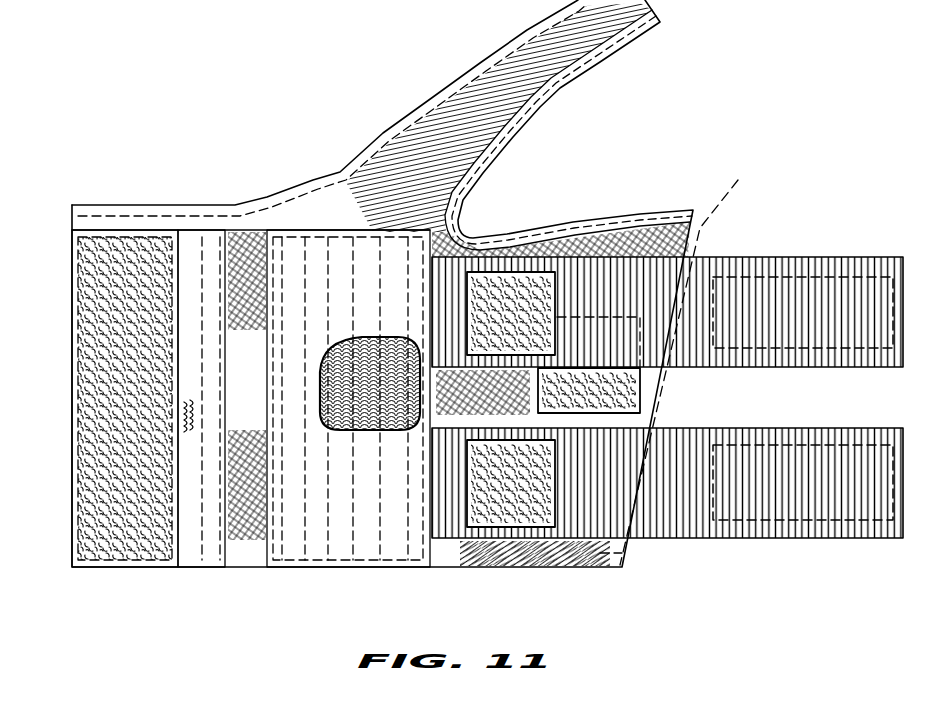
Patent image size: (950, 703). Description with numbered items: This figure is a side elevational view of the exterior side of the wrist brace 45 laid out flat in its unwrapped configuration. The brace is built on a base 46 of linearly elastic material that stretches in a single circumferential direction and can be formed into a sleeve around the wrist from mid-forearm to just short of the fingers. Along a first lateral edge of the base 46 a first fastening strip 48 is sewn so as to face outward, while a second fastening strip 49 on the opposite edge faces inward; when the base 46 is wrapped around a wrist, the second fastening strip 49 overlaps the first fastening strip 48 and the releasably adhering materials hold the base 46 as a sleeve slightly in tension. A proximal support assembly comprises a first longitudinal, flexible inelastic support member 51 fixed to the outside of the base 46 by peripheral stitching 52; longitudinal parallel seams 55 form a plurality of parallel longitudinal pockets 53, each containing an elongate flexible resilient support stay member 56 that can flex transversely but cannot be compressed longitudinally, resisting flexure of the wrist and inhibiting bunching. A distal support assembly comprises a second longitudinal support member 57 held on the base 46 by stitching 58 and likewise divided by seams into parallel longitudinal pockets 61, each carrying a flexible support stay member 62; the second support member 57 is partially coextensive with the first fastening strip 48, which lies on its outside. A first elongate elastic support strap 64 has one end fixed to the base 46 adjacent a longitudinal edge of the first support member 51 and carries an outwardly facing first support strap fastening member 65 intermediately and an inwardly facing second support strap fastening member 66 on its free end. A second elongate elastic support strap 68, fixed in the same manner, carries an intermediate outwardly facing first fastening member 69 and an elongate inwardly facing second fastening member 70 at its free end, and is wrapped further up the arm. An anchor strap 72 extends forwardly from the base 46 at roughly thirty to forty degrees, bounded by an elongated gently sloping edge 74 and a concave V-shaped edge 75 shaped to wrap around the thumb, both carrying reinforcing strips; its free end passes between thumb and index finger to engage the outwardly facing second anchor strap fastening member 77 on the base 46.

The wrist brace 45 is at (790, 176).
The base 46 is at (468, 240).
The first fastening strip 48 is at (90, 288).
The second fastening strip 49 is at (687, 362).
The first support member 51 is at (297, 262).
The peripheral stitching 52 is at (290, 560).
The longitudinal pockets 53 is at (367, 548).
The longitudinal parallel seams 55 is at (407, 520).
The support stay member 56 is at (372, 345).
The second support member 57 is at (190, 250).
The stitching 58 is at (222, 535).
The longitudinal pockets 61 is at (180, 540).
The flexible support stay member 62 is at (185, 422).
The first support strap 64 is at (700, 283).
The first support strap fastening member 65 is at (548, 268).
The second support strap fastening member 66 is at (840, 290).
The second support strap 68 is at (684, 515).
The first fastening member 69 is at (522, 500).
The second fastening member 70 is at (862, 505).
The anchor strap 72 is at (470, 65).
The gently sloping edge 74 is at (530, 32).
The concave edge 75 is at (532, 108).
The second anchor strap fastening member 77 is at (627, 395).